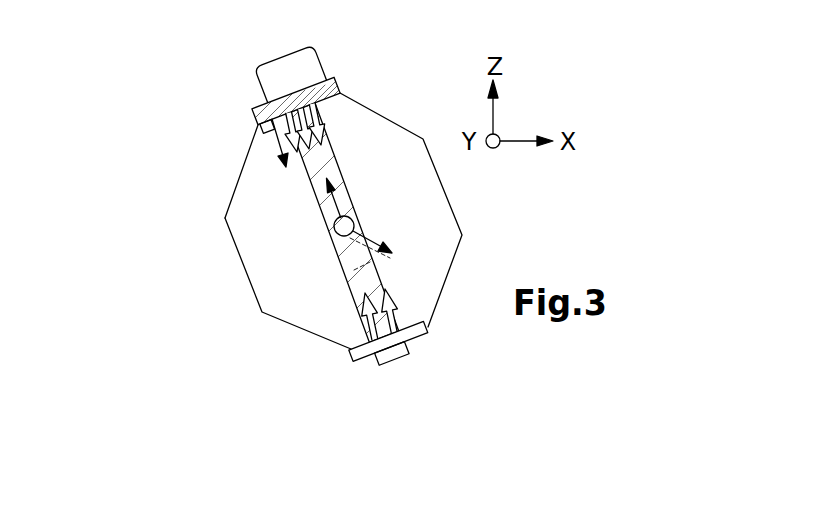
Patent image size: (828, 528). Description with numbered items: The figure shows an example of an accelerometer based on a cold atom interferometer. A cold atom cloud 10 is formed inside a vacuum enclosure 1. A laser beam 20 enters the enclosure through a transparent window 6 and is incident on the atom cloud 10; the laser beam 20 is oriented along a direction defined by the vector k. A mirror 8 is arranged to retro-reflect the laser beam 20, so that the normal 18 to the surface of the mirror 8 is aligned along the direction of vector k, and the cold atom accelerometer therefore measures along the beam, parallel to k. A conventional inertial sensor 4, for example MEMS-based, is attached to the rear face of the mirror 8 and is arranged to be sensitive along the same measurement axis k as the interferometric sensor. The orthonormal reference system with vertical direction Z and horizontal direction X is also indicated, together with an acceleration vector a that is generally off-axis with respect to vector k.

The vacuum enclosure 1 is at (265, 343).
The conventional inertial sensor 4 is at (252, 82).
The transparent window 6 is at (364, 362).
The mirror 8 is at (342, 84).
The cold atom cloud 10 is at (352, 215).
The normal to the surface of the mirror 18 is at (248, 156).
The laser beam 20 is at (386, 364).